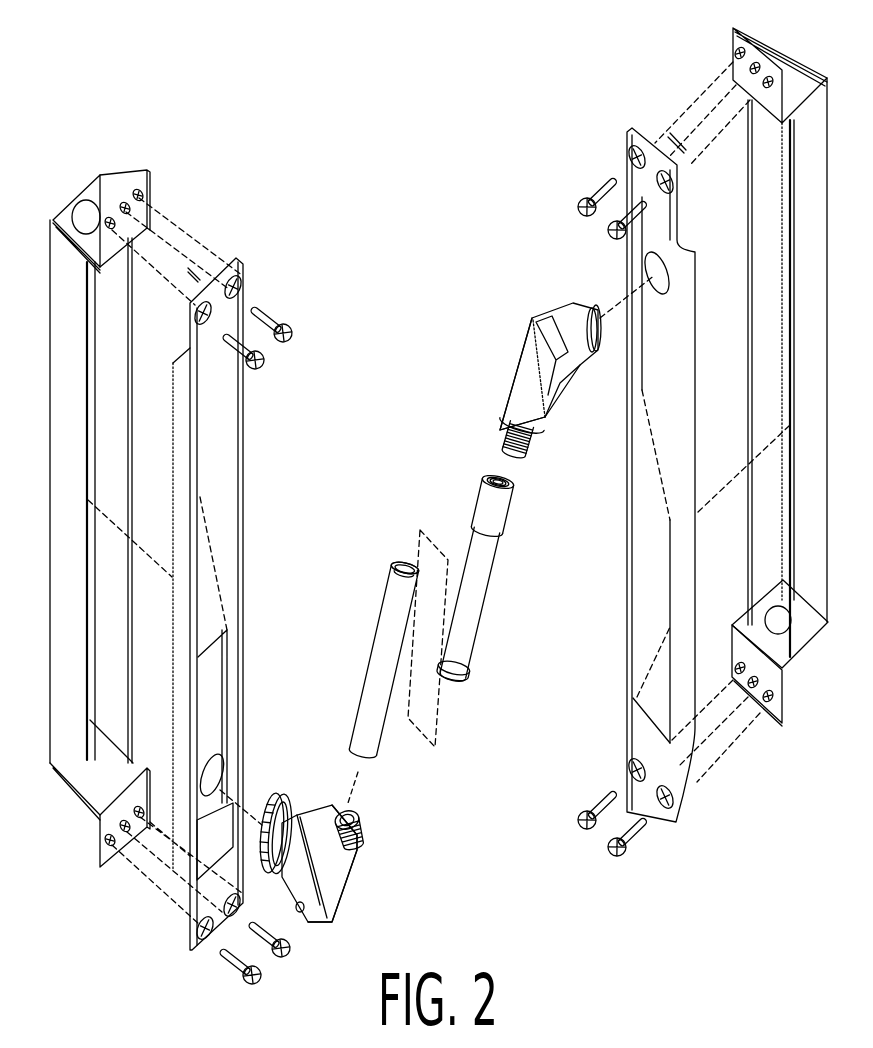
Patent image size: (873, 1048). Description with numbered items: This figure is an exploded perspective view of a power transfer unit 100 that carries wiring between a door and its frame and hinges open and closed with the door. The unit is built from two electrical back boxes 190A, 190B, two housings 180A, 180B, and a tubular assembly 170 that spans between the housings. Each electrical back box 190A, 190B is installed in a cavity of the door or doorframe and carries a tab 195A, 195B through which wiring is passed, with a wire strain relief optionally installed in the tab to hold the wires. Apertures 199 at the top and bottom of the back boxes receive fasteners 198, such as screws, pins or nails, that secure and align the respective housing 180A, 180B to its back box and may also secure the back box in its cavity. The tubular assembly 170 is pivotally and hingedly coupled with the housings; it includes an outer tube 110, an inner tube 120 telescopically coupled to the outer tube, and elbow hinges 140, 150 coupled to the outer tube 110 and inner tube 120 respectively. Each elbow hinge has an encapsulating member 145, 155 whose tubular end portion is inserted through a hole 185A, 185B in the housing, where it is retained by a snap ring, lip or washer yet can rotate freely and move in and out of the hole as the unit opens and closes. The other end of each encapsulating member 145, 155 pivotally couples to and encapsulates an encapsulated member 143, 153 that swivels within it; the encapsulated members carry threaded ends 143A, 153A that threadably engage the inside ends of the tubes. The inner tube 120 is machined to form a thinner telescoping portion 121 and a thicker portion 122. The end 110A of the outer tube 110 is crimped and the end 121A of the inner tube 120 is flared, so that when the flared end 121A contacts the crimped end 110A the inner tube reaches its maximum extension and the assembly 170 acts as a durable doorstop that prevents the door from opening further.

The power transfer unit 100 is at (106, 68).
The outer tube 110 is at (373, 643).
The crimped end 110A is at (406, 566).
The inner tube 120 is at (485, 608).
The telescoping portion 121 is at (463, 640).
The flared end 121A is at (455, 687).
The thicker portion 122 is at (502, 517).
The elbow hinge 140 is at (308, 927).
The encapsulated member 143 is at (330, 887).
The threaded end 143A is at (353, 832).
The encapsulating member 145 is at (295, 853).
The elbow hinge 150 is at (533, 320).
The encapsulated member 153 is at (517, 383).
The threaded end 153A is at (500, 437).
The encapsulating member 155 is at (590, 310).
The tubular assembly 170 is at (396, 360).
The housing 180A is at (180, 500).
The housing 180B is at (686, 383).
The hole 185A is at (207, 782).
The hole 185B is at (660, 273).
The electrical back box 190A is at (62, 273).
The electrical back box 190B is at (810, 153).
The tab 195A is at (92, 218).
The tab 195B is at (781, 630).
The fasteners 198 is at (233, 962).
The apertures 199 is at (141, 196).